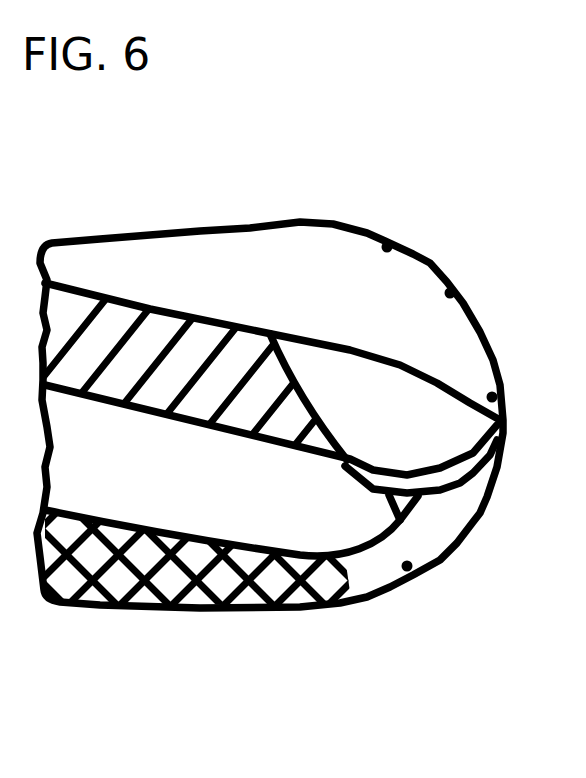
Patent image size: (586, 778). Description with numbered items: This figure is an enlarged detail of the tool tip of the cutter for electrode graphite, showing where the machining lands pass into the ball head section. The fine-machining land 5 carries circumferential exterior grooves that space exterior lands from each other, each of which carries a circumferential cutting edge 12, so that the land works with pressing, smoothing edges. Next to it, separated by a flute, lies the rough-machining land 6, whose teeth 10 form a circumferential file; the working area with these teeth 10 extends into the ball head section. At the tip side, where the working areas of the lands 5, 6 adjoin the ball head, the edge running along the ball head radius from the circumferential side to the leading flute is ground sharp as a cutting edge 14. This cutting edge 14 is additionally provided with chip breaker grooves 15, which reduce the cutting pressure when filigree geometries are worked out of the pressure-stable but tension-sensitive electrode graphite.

The fine-machining land 5 is at (318, 397).
The rough-machining land 6 is at (305, 618).
The teeth 10 is at (173, 607).
The circumferential cutting edge 12 is at (210, 340).
The cutting edge 14 is at (436, 262).
The chip breaker groove 15 is at (481, 516).